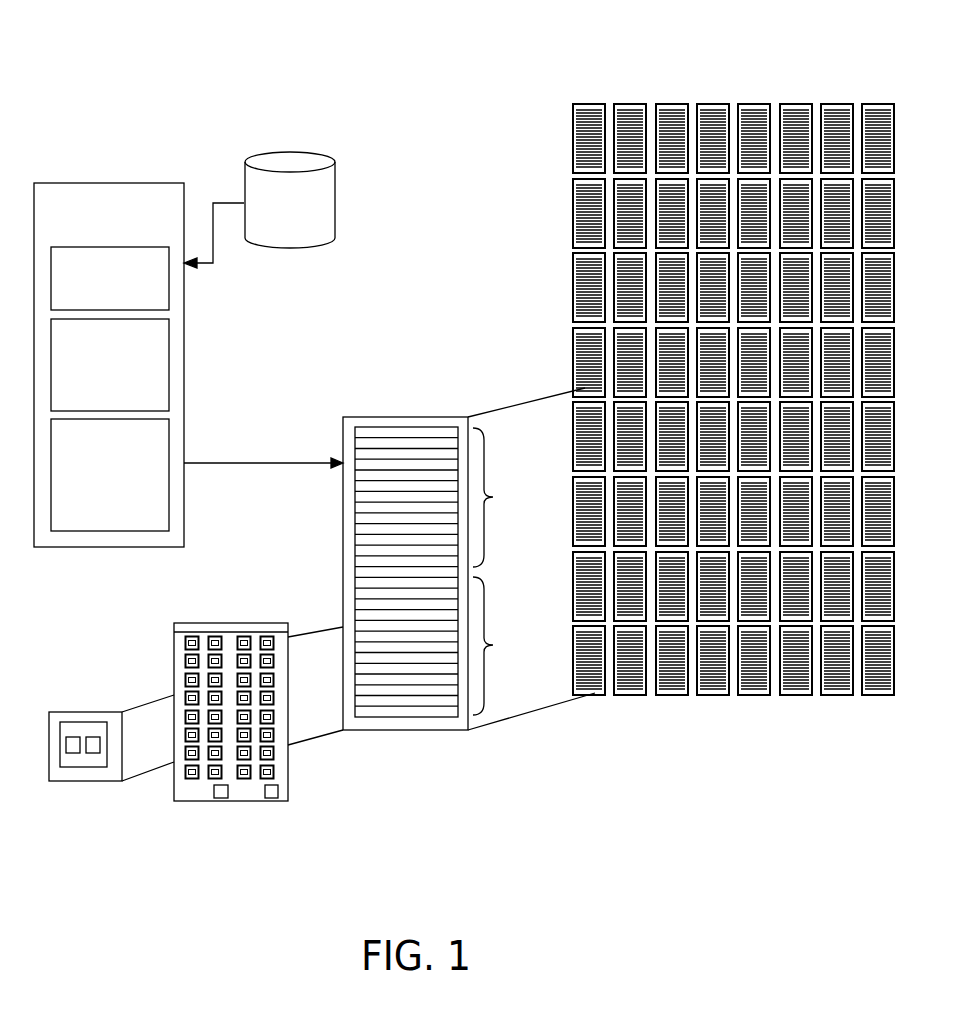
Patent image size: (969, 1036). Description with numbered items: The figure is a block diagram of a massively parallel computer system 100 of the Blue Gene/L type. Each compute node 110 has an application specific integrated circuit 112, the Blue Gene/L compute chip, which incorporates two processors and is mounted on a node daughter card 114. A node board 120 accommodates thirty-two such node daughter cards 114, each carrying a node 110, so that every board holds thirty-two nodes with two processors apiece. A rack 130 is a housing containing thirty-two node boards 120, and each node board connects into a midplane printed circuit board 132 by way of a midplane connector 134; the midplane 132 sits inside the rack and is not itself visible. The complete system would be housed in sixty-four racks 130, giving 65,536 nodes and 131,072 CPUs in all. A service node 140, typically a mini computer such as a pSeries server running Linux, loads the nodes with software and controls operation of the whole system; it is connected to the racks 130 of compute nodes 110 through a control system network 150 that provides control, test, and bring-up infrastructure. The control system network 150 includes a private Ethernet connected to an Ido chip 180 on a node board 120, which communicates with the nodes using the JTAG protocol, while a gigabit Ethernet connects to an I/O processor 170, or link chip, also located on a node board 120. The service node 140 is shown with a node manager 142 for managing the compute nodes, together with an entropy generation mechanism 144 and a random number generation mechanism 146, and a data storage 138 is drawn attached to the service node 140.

The massively parallel computer system 100 is at (216, 73).
The compute node 110 is at (65, 712).
The application specific integrated circuit 112 is at (62, 767).
The node daughter card 114 is at (93, 783).
The node board 120 is at (288, 678).
The rack 130 is at (382, 417).
The midplane printed circuit board 132 is at (517, 571).
The midplane connector 134 is at (174, 625).
The data storage 138 is at (335, 175).
The service node 140 is at (96, 231).
The node manager 142 is at (169, 277).
The entropy generation mechanism 144 is at (169, 365).
The random number generation mechanism 146 is at (169, 428).
The control system network 150 is at (222, 462).
The I/O processor 170 is at (222, 797).
The Ido chip 180 is at (278, 798).